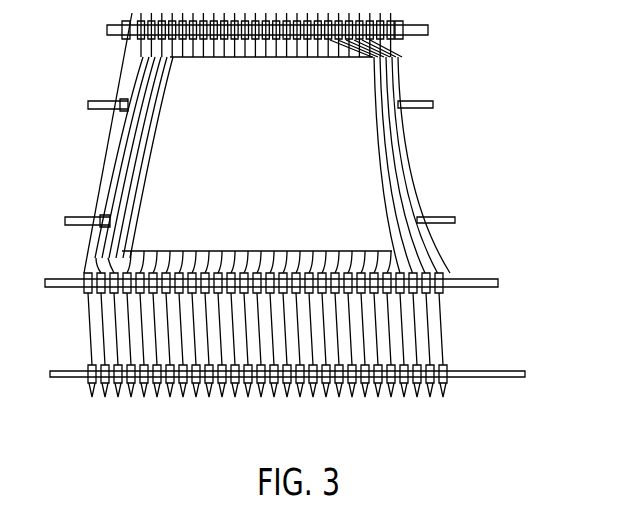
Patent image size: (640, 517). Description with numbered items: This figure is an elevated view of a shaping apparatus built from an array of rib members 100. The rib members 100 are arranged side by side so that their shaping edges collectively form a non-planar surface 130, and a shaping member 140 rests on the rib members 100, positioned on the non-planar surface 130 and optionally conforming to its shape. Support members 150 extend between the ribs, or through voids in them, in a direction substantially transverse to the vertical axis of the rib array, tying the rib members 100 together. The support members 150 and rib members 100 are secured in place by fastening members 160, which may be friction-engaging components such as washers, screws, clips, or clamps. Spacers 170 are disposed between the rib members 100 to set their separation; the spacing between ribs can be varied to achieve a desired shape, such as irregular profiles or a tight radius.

The rib members 100 is at (87, 332).
The non-planar surface 130 is at (398, 158).
The shaping member 140 is at (280, 160).
The support members 150 is at (453, 218).
The fastening members 160 is at (76, 276).
The spacers 170 is at (276, 398).